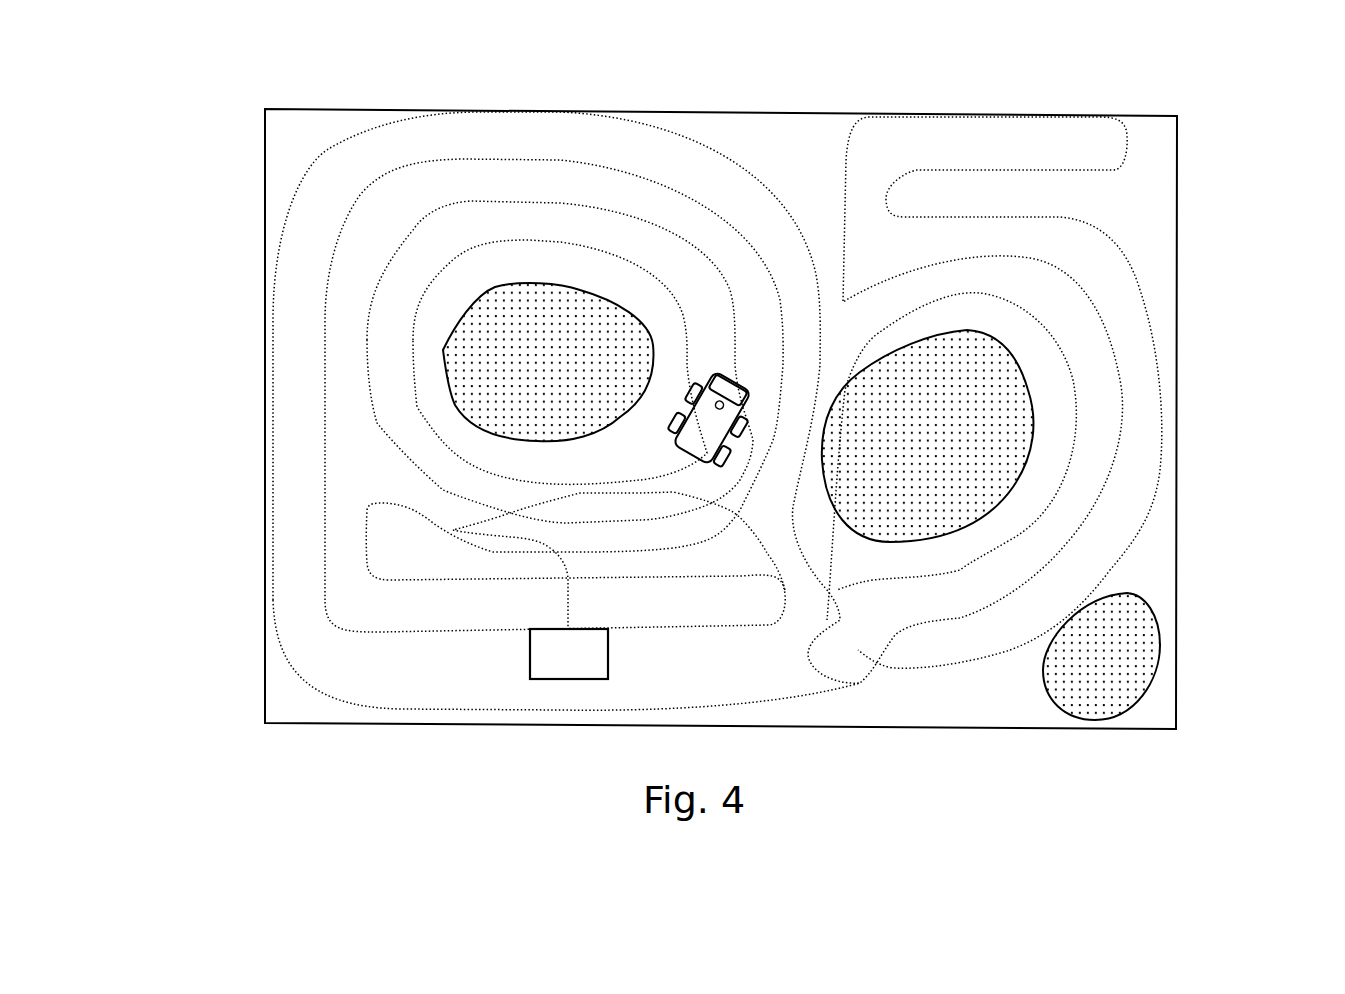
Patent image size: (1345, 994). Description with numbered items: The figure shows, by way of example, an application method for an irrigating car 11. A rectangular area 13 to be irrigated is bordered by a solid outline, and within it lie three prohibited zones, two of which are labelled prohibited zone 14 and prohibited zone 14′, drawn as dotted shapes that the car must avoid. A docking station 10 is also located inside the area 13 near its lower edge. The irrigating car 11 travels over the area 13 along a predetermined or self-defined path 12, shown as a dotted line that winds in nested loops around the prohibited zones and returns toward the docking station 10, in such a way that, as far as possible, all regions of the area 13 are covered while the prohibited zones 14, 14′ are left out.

The docking station 10 is at (570, 647).
The irrigating car 11 is at (720, 425).
The path 12 is at (337, 240).
The area 13 is at (777, 155).
The prohibited zone 14 is at (483, 348).
The prohibited zone 14′ is at (985, 408).